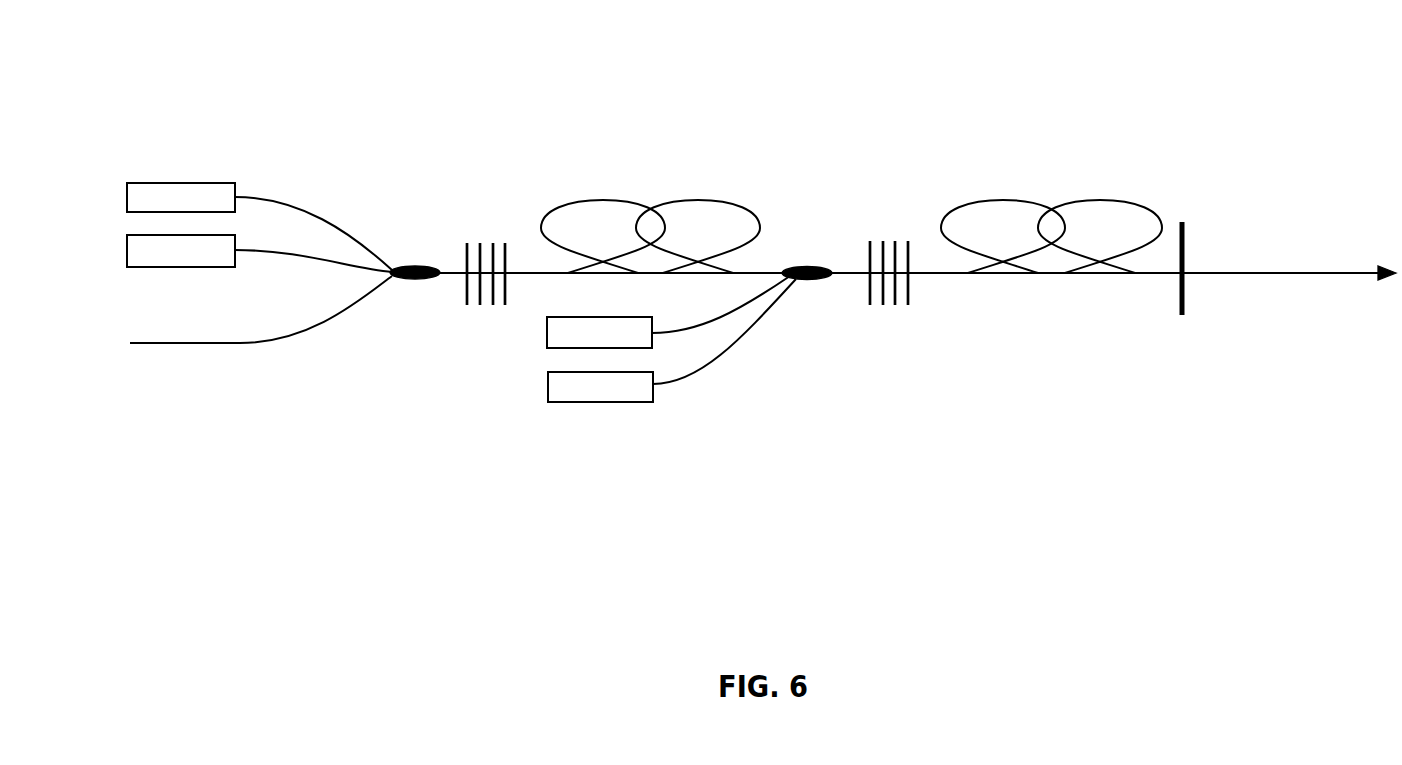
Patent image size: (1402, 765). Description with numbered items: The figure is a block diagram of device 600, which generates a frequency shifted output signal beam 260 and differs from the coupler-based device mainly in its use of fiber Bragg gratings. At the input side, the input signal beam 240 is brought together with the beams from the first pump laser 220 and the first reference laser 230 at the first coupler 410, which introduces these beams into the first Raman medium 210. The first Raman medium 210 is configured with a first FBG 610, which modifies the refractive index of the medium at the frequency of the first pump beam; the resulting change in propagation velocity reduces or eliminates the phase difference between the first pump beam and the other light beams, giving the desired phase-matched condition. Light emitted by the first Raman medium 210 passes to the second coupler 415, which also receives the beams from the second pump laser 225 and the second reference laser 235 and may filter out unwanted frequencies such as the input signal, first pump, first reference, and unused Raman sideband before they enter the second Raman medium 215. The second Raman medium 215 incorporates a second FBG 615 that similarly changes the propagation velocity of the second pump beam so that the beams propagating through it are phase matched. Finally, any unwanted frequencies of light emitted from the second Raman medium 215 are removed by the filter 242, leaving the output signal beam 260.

The device 600 is at (318, 95).
The first pump laser 220 is at (171, 208).
The first reference laser 230 is at (171, 263).
The input signal beam 240 is at (171, 335).
The first coupler 410 is at (433, 250).
The first FBG 610 is at (507, 233).
The first Raman medium 210 is at (675, 188).
The second pump laser 225 is at (589, 345).
The second reference laser 235 is at (590, 398).
The second coupler 415 is at (827, 249).
The second FBG 615 is at (909, 232).
The second Raman medium 215 is at (1079, 187).
The filter 242 is at (1182, 222).
The output signal beam 260 is at (1311, 263).